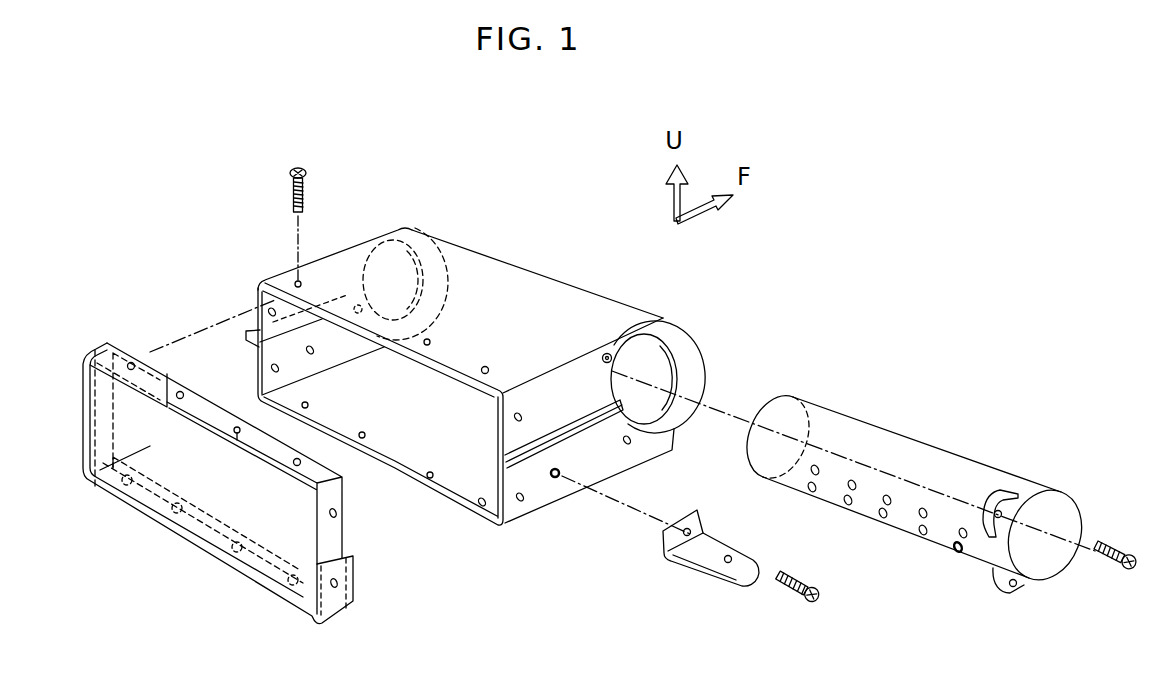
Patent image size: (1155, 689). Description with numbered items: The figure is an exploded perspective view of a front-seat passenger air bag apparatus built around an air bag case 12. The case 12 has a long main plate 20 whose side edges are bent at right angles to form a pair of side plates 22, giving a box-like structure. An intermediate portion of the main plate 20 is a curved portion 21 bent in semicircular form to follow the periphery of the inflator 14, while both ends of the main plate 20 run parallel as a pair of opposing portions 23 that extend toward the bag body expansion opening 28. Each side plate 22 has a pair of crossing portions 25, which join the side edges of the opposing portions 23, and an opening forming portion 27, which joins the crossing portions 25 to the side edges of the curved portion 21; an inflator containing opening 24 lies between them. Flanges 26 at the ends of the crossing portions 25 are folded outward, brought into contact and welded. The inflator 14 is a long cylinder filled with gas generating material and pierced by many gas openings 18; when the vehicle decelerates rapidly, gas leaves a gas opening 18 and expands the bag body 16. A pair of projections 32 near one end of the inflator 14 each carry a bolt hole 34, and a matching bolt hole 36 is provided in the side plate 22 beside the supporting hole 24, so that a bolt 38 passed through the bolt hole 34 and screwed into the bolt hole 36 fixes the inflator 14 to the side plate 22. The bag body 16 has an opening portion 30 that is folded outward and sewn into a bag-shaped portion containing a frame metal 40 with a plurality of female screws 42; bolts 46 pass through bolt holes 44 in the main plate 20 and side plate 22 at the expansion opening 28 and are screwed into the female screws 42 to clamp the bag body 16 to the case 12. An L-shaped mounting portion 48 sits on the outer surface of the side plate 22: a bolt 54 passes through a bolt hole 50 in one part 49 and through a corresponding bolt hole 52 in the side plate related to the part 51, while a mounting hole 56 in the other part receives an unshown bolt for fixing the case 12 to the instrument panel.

The air bag case 12 is at (370, 242).
The inflator 14 is at (978, 463).
The bag body 16 is at (353, 583).
The gas openings 18 is at (957, 550).
The main plate 20 is at (511, 267).
The curved portion 21 is at (581, 275).
The side plates 22 is at (252, 375).
The opposing portions 23 is at (527, 293).
The inflator containing opening 24 is at (657, 360).
The crossing portions 25 is at (256, 377).
The flanges 26 is at (600, 413).
The opening forming portion 27 is at (678, 336).
The bag body expansion opening 28 is at (393, 481).
The opening portion 30 is at (306, 594).
The projections 32 is at (990, 500).
The bolt hole 34 is at (1007, 509).
The bolt hole 36 is at (609, 354).
The bolt 38 is at (1104, 543).
The frame metal 40 is at (277, 462).
The female screws 42 is at (236, 440).
The bolt holes 44 is at (513, 416).
The bolts 46 is at (294, 206).
The mounting portion 48 is at (690, 566).
The one part 49 is at (704, 522).
The bolt hole 50 is at (687, 529).
The one part 51 is at (756, 557).
The bolt hole 52 is at (560, 481).
The bolt 54 is at (792, 591).
The mounting hole 56 is at (728, 563).